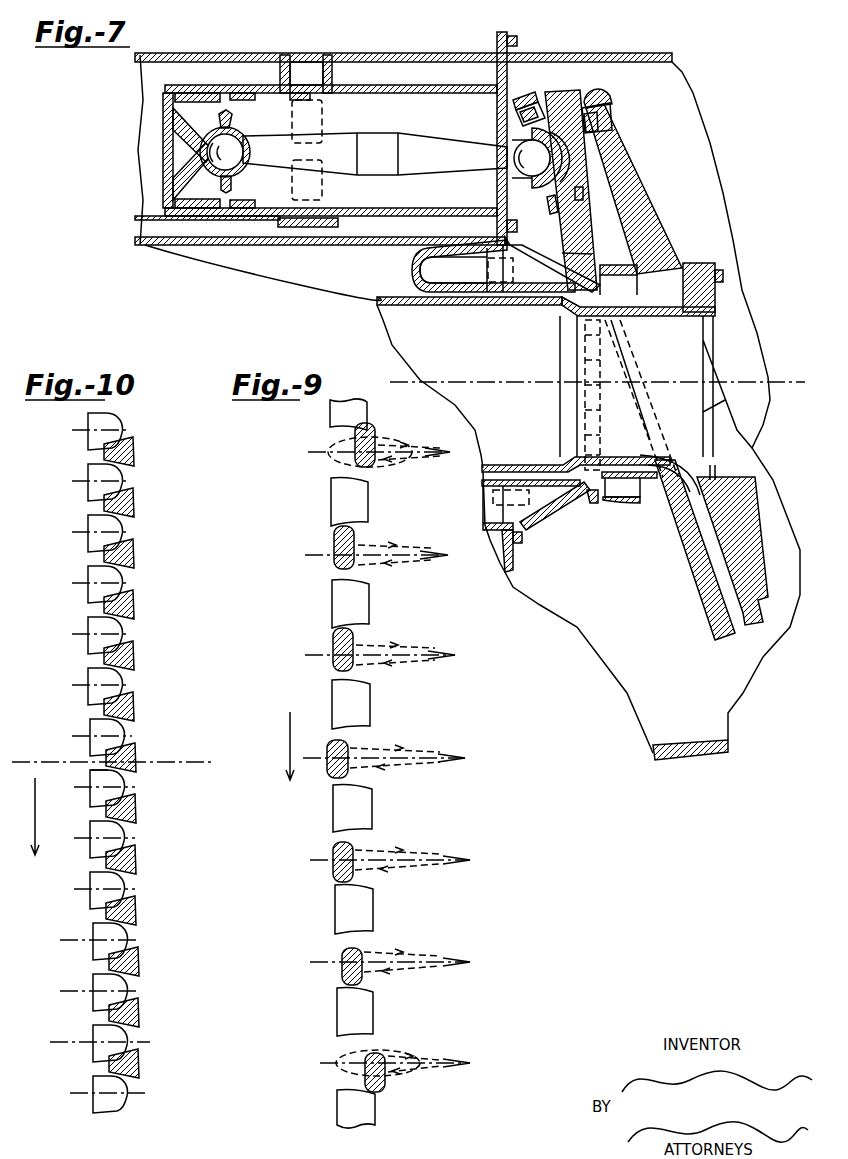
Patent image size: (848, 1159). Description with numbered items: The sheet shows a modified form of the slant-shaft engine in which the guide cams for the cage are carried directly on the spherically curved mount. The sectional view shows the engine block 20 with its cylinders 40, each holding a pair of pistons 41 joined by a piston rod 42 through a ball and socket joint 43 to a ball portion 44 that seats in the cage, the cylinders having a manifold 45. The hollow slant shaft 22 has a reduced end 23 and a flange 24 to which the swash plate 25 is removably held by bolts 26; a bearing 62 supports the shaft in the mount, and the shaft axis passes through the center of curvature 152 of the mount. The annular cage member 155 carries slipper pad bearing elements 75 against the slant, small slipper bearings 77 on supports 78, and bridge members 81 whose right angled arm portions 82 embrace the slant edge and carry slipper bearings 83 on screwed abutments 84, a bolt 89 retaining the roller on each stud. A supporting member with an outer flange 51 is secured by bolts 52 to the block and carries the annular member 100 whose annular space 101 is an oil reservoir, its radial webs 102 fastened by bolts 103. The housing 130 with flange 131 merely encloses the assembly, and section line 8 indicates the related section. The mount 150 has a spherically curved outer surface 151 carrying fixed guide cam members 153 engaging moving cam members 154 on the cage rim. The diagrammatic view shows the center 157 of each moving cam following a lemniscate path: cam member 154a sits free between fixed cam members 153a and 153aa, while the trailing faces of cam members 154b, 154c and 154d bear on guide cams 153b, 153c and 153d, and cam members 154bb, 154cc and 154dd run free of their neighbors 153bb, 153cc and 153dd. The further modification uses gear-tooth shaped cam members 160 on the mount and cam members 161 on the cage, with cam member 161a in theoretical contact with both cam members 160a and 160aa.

In FIG. 7, the engine block 20 is at (182, 43).
In FIG. 7, the cylinders 40 is at (393, 92).
In FIG. 7, the pistons 41 is at (165, 118).
In FIG. 7, the piston rod 42 is at (408, 150).
In FIG. 7, the ball and socket joint 43 is at (252, 128).
In FIG. 7, the ball portion 44 is at (512, 175).
In FIG. 7, the manifold 45 is at (320, 225).
In FIG. 7, the flange 131 is at (507, 34).
In FIG. 7, the housing 130 is at (650, 52).
In FIG. 7, the bolt 89 is at (518, 98).
In FIG. 7, the bridge member 81 is at (562, 92).
In FIG. 7, the slipper bearing 83 is at (600, 98).
In FIG. 7, the screwed abutment 84 is at (612, 112).
In FIG. 7, the right angled arm portion 82 is at (600, 122).
In FIG. 7, the slipper pad bearing element 75 is at (570, 160).
In FIG. 7, the small slipper bearing 77 is at (584, 192).
In FIG. 7, the support 78 is at (548, 212).
In FIG. 7, the section line 8 is at (584, 251).
In FIG. 7, the swash plate 25 is at (633, 193).
In FIG. 7, the flange 24 is at (698, 263).
In FIG. 7, the bolts 26 is at (720, 282).
In FIG. 7, the annular member 100 is at (412, 255).
In FIG. 7, the annular space 101 is at (425, 270).
In FIG. 7, the bolts 103 is at (488, 268).
In FIG. 7, the slant shaft 22 is at (430, 307).
In FIG. 7, the reduced end 23 is at (600, 312).
In FIG. 7, the radial webs 102 is at (490, 292).
In FIG. 7, the bearing 62 is at (636, 312).
In FIG. 7, the center of curvature 152 is at (608, 388).
In FIG. 7, the mount 150 is at (628, 505).
In FIG. 7, the spherically curved outer surface 151 is at (592, 505).
In FIG. 7, the fixed guide cam members 153 is at (588, 497).
In FIG. 7, the moving cam members 154 is at (660, 497).
In FIG. 7, the annular cage member 155 is at (690, 565).
In FIG. 7, the outer flange 51 is at (513, 545).
In FIG. 7, the bolts 52 is at (523, 540).
In FIG. 10, the cam members 160 is at (88, 572).
In FIG. 10, the cam member 160a is at (90, 725).
In FIG. 10, the cam member 160aa is at (90, 795).
In FIG. 10, the cam members 161 is at (134, 604).
In FIG. 10, the cam member 161a is at (136, 752).
In FIG. 9, the guide cam 153d is at (330, 418).
In FIG. 9, the guide cam 153c is at (331, 498).
In FIG. 9, the guide cam 153b is at (332, 600).
In FIG. 9, the fixed cam member 153a is at (332, 695).
In FIG. 9, the fixed cam member 153aa is at (333, 810).
In FIG. 9, the blade 153bb is at (335, 896).
In FIG. 9, the blade 153cc is at (337, 1005).
In FIG. 9, the blade 153dd is at (337, 1108).
In FIG. 9, the cam member 154d is at (378, 436).
In FIG. 9, the cam member 154c is at (355, 530).
In FIG. 9, the cam member 154b is at (353, 634).
In FIG. 9, the cam member 154a is at (348, 744).
In FIG. 9, the cam member 154bb is at (353, 845).
In FIG. 9, the cam member 154cc is at (362, 950).
In FIG. 9, the cam member 154dd is at (375, 1052).
In FIG. 9, the center 157 is at (335, 540).